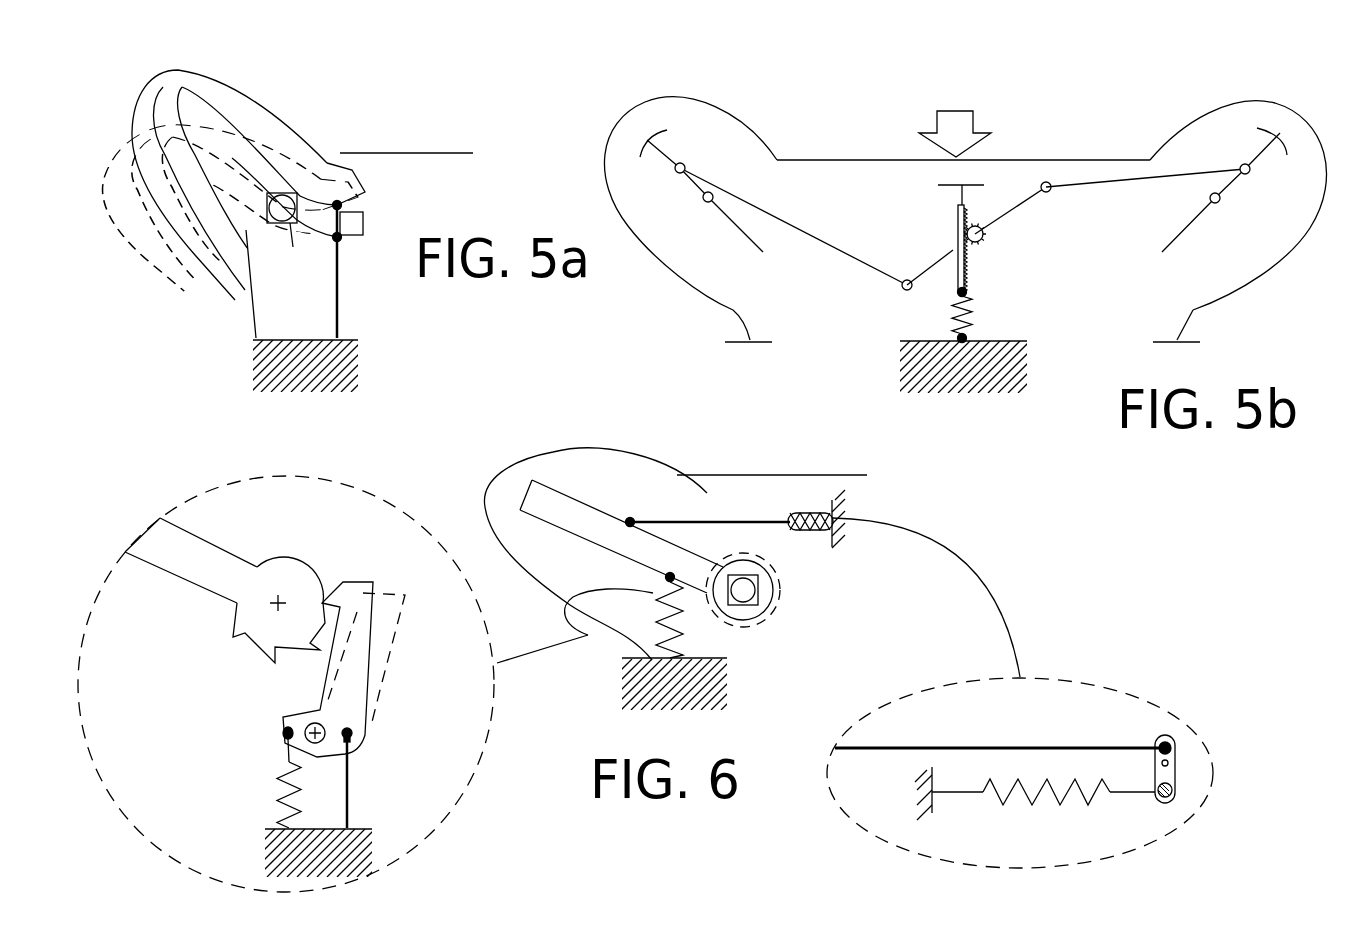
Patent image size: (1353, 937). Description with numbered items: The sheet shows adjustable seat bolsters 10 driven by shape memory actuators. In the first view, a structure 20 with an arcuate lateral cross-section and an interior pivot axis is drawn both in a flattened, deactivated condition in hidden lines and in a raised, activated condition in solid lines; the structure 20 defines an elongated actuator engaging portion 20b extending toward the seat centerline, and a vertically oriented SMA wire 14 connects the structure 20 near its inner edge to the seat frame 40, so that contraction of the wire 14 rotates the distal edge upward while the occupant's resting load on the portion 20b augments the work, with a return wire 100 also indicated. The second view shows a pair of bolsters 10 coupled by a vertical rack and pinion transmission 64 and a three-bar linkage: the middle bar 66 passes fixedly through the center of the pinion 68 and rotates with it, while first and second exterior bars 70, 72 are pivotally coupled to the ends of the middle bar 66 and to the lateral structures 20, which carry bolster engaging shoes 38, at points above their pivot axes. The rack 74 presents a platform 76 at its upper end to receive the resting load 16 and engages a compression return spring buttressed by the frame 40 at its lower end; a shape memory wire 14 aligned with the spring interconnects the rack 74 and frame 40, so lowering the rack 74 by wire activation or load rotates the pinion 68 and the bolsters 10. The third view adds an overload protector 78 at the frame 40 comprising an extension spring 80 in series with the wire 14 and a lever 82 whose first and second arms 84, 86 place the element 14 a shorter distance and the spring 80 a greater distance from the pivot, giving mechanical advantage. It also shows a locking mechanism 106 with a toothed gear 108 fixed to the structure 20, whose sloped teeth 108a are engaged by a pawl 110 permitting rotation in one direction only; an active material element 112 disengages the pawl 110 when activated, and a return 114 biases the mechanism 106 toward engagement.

In FIG. 5A, the lateral bolster 10 is at (241, 49).
In FIG. 6, the lateral bolster 10 is at (632, 448).
In FIG. 5A, the shape memory wire 14 is at (338, 285).
In FIG. 5B, the shape memory wire 14 is at (948, 297).
In FIG. 6, the shape memory wire 14 is at (1088, 748).
In FIG. 5B, the applied load 16 is at (893, 160).
In FIG. 5A, the arcuate structure 20 is at (232, 157).
In FIG. 5B, the arcuate structure 20 is at (706, 118).
In FIG. 6, the arcuate structure 20 is at (165, 518).
In FIG. 5A, the actuator engaging portion 20b is at (340, 205).
In FIG. 5B, the bolster engaging shoe 38 is at (1247, 113).
In FIG. 5B, the seat frame 40 is at (1027, 353).
In FIG. 5B, the rack and pinion transmission 64 is at (995, 270).
In FIG. 5B, the middle bar 66 is at (1022, 200).
In FIG. 5B, the pinion 68 is at (983, 222).
In FIG. 5B, the first exterior bar 70 is at (793, 223).
In FIG. 5B, the second exterior bar 72 is at (1103, 182).
In FIG. 5B, the rack 74 is at (958, 232).
In FIG. 5B, the platform 76 is at (938, 185).
In FIG. 6, the overload protector 78 is at (817, 533).
In FIG. 6, the extension spring 80 is at (1053, 800).
In FIG. 6, the lever 82 is at (1178, 735).
In FIG. 6, the first arm 84 is at (1175, 750).
In FIG. 6, the second arm 86 is at (1177, 790).
In FIG. 5A, the return wire 100 is at (253, 217).
In FIG. 5B, the return wire 100 is at (947, 328).
In FIG. 6, the locking mechanism 106 is at (775, 613).
In FIG. 6, the toothed gear 108 is at (278, 560).
In FIG. 6, the sloped teeth 108a is at (233, 637).
In FIG. 6, the pawl 110 is at (368, 690).
In FIG. 6, the active material element 112 is at (350, 760).
In FIG. 6, the return 114 is at (283, 760).